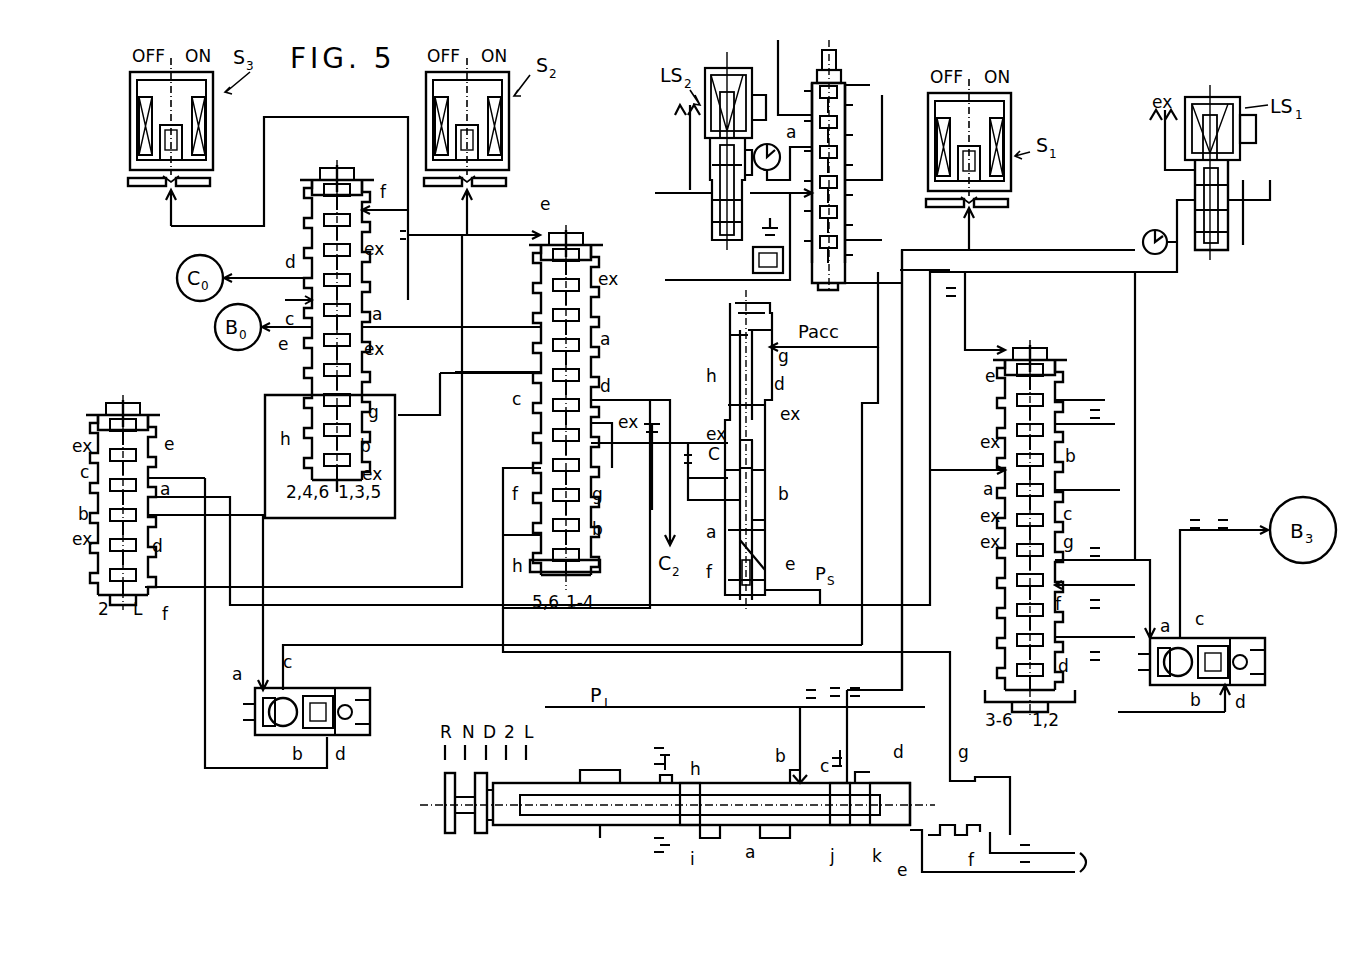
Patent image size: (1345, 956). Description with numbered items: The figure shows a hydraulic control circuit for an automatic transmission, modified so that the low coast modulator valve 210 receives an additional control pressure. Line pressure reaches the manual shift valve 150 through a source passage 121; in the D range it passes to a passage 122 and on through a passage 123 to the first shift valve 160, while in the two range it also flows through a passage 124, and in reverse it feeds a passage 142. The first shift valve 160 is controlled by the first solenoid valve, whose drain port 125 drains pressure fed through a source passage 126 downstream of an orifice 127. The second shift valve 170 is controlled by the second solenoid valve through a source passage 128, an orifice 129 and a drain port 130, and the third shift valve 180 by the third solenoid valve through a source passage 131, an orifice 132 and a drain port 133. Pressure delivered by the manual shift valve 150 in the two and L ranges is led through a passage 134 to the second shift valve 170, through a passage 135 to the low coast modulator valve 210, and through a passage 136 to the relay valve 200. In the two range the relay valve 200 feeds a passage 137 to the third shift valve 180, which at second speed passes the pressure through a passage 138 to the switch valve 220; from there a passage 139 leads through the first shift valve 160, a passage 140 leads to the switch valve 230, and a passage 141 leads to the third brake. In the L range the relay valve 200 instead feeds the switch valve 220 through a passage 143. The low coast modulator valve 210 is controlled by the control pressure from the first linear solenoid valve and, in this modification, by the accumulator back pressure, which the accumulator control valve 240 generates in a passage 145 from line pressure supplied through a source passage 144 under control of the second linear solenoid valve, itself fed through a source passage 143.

The source passage 121 is at (735, 710).
The passage 122 is at (847, 698).
The passage 123 is at (902, 624).
The passage 124 is at (1092, 864).
The drain port 125 is at (974, 213).
The source passage 126 is at (922, 296).
The orifice 127 is at (967, 313).
The source passage 128 is at (478, 412).
The orifice 129 is at (466, 262).
The drain port 130 is at (471, 197).
The source passage 131 is at (410, 290).
The orifice 132 is at (470, 245).
The drain port 133 is at (175, 198).
The passage 134 is at (654, 655).
The passage 135 is at (634, 448).
The passage 136 is at (427, 607).
The passage 137 is at (328, 520).
The passage 138 is at (263, 568).
The passage 139 is at (370, 614).
The passage 140 is at (1150, 566).
The passage 141 is at (1210, 516).
The passage 142 is at (1162, 714).
The passage 143 is at (688, 194).
The source passage 144 is at (724, 236).
The passage 145 is at (877, 305).
The manual shift valve 150 is at (614, 782).
The first shift valve 160 is at (1062, 345).
The second shift valve 170 is at (602, 228).
The third shift valve 180 is at (328, 162).
The relay valve 200 is at (139, 384).
The low coast modulator valve 210 is at (711, 337).
The switch valve 220 is at (382, 705).
The switch valve 230 is at (1232, 628).
The accumulator control valve 240 is at (856, 88).